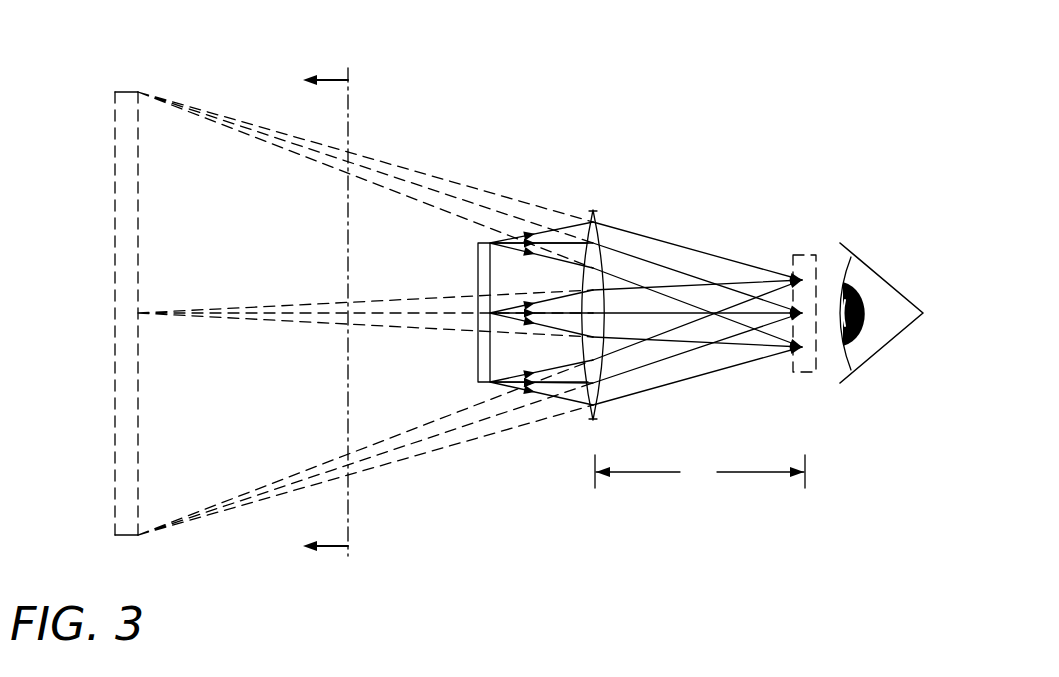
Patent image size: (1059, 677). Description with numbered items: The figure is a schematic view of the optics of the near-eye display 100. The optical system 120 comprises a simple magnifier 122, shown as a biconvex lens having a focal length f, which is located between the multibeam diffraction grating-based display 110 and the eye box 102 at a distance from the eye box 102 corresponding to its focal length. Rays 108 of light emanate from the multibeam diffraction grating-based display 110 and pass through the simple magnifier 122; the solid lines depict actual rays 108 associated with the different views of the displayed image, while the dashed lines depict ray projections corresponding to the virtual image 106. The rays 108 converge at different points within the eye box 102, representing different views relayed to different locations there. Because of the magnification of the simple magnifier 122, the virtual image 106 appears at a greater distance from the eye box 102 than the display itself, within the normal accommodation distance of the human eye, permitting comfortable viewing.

The near-eye display 100 is at (796, 52).
The eye box 102 is at (806, 255).
The virtual image 106 is at (128, 92).
The rays 108 is at (659, 212).
The multibeam diffraction grating-based display 110 is at (478, 272).
The optical system 120 is at (633, 110).
The simple magnifier 122 is at (593, 210).